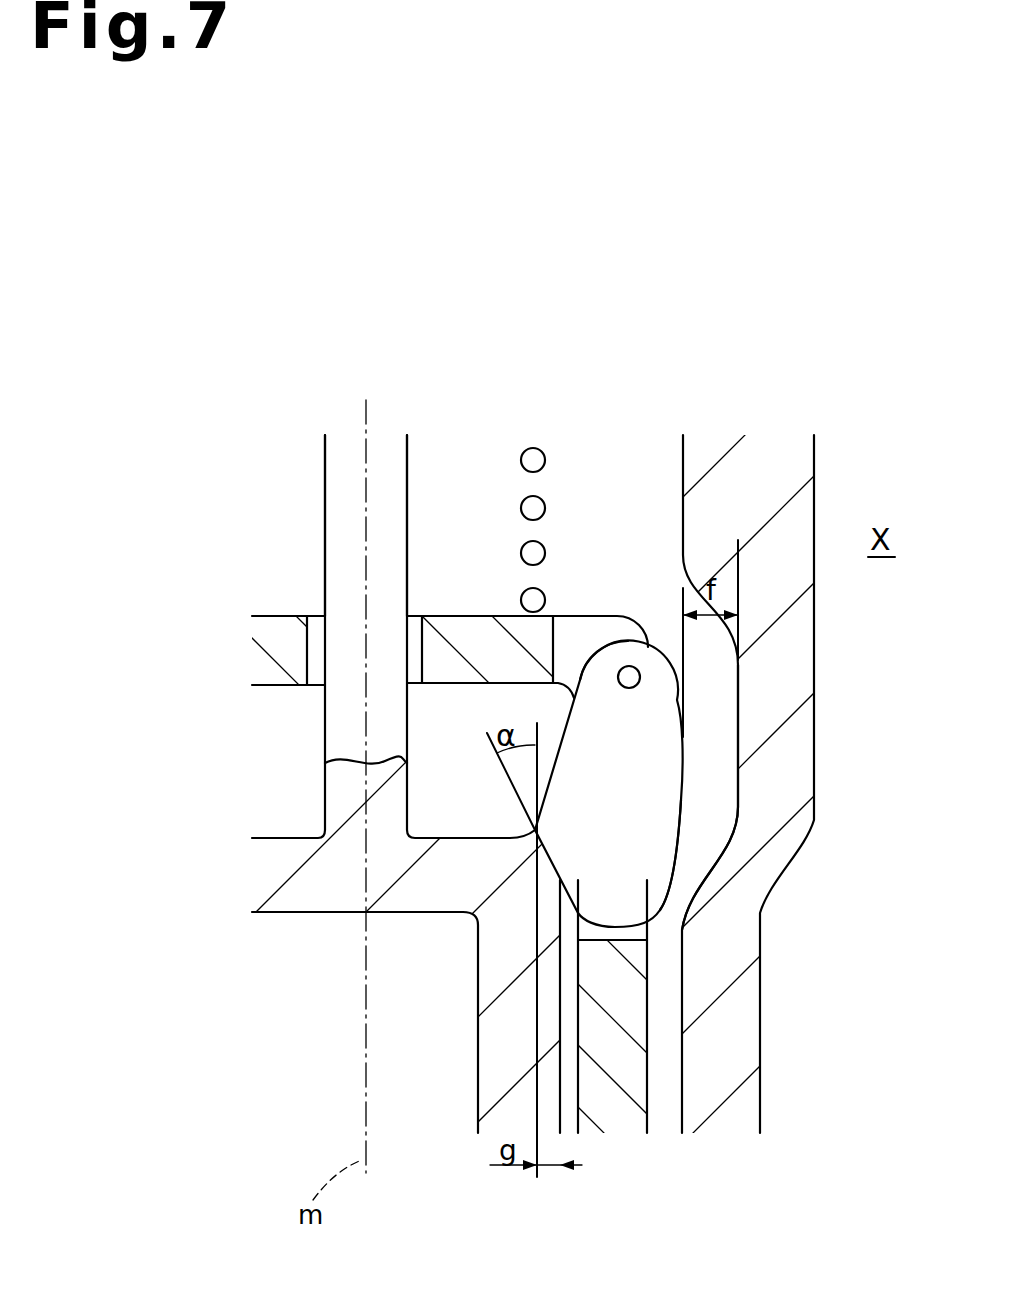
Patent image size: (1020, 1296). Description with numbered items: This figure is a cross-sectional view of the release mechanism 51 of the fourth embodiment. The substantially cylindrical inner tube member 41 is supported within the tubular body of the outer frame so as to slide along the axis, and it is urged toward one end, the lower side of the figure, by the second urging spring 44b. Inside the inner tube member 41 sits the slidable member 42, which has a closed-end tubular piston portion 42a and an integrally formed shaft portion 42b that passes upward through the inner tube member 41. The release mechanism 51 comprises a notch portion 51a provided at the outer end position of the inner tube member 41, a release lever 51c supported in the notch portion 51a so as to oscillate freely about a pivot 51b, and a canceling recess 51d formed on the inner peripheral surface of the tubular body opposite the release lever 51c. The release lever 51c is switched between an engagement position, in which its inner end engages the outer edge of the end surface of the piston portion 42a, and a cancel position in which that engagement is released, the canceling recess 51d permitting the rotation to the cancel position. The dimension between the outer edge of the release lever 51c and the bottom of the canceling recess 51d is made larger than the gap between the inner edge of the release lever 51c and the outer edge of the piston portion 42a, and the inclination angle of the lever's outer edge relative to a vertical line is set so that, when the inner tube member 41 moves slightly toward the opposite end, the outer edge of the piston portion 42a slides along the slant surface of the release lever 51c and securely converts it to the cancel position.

The inner tube member 41 is at (653, 993).
The slidable member 42 is at (320, 749).
The piston portion 42a is at (560, 1067).
The shaft portion 42b is at (407, 482).
The second urging spring 44b is at (545, 460).
The release mechanism 51 is at (663, 588).
The notch portion 51a is at (556, 637).
The pivot 51b is at (629, 670).
The release lever 51c is at (685, 817).
The canceling recess 51d is at (738, 766).